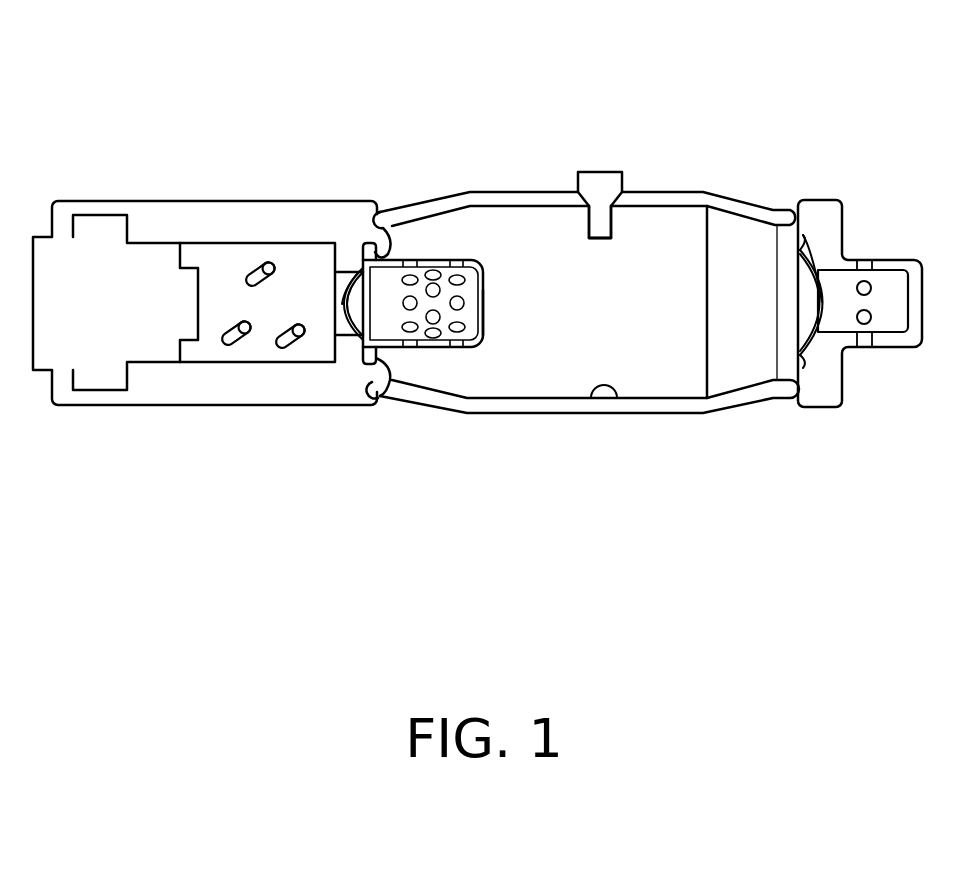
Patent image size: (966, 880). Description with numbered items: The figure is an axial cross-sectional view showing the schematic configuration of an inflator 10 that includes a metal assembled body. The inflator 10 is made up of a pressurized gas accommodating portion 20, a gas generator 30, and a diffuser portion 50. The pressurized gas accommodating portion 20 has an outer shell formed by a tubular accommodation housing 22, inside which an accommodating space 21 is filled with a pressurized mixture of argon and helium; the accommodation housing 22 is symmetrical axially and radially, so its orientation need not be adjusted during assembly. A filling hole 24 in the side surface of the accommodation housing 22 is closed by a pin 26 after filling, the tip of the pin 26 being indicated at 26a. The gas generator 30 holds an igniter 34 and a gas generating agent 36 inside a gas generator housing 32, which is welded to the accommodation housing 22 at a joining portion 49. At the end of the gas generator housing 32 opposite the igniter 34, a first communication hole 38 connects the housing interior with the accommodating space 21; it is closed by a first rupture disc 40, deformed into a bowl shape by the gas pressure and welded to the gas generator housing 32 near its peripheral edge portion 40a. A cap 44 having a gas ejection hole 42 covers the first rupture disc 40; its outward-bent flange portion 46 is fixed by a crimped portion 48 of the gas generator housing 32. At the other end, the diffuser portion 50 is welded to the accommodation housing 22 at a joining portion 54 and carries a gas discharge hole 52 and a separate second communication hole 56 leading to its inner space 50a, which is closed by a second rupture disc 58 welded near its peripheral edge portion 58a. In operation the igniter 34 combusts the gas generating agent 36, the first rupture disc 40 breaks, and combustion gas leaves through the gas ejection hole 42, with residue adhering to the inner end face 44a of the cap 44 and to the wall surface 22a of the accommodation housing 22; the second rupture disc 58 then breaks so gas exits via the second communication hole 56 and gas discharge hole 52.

The inflator 10 is at (322, 568).
The pressurized gas accommodating portion 20 is at (497, 183).
The accommodating space 21 is at (651, 365).
The accommodation housing 22 is at (677, 192).
The wall surface 22a is at (617, 398).
The filling hole 24 is at (601, 211).
The pin 26 is at (592, 177).
The tip of tab 26a is at (597, 241).
The gas generator 30 is at (153, 170).
The gas generator housing 32 is at (268, 210).
The igniter 34 is at (155, 350).
The gas generating agent 36 is at (240, 347).
The first communication hole 38 is at (344, 268).
The first rupture disc 40 is at (335, 315).
The peripheral edge portion 40a is at (350, 340).
The gas ejection hole 42 is at (460, 347).
The cap 44 is at (483, 258).
The end face 44a is at (487, 320).
The flange portion 46 is at (360, 250).
The crimped portion 48 is at (386, 254).
The joining portion 49 is at (365, 207).
The diffuser portion 50 is at (852, 202).
The inner space 50a is at (883, 307).
The gas discharge hole 52 is at (865, 343).
The joining portion 54 is at (810, 400).
The second communication hole 56 is at (803, 303).
The second rupture disc 58 is at (830, 333).
The peripheral edge portion 58a is at (803, 268).